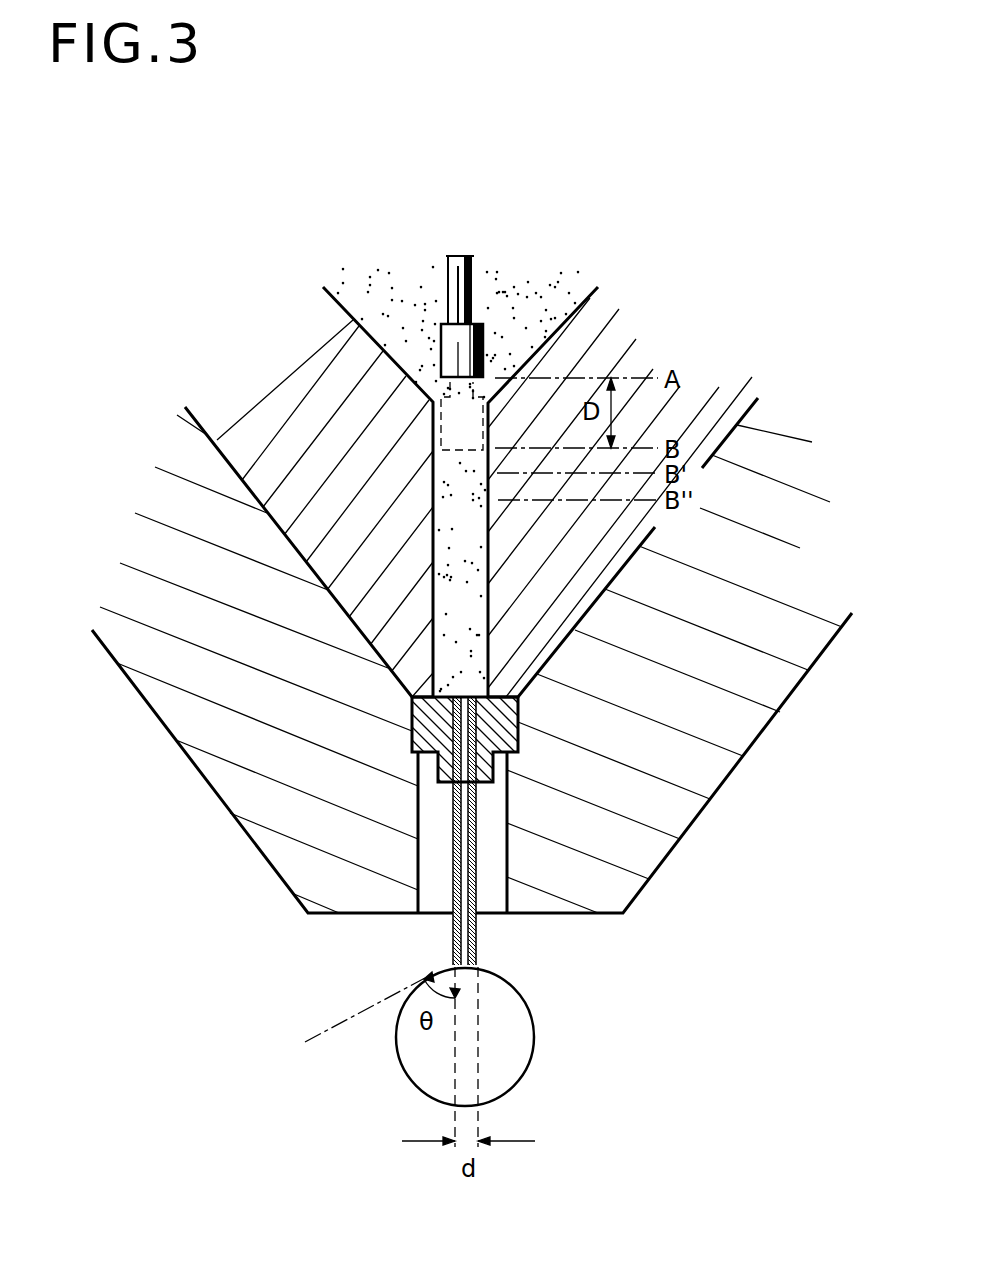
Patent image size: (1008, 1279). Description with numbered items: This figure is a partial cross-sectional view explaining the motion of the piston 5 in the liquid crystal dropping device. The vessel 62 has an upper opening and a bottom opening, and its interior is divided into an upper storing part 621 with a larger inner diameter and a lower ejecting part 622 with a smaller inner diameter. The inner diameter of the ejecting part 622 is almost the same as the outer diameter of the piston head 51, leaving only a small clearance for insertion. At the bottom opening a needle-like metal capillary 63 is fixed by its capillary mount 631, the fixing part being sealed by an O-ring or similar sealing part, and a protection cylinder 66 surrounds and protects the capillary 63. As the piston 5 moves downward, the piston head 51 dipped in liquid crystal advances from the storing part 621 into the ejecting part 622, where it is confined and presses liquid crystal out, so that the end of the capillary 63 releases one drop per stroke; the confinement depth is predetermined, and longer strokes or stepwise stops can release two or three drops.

The piston 5 is at (473, 282).
The piston head 51 is at (443, 335).
The vessel 62 is at (459, 565).
The storing part 621 is at (380, 328).
The ejecting part 622 is at (485, 603).
The capillary 63 is at (478, 942).
The capillary mount 631 is at (410, 757).
The protection cylinder 66 is at (268, 810).